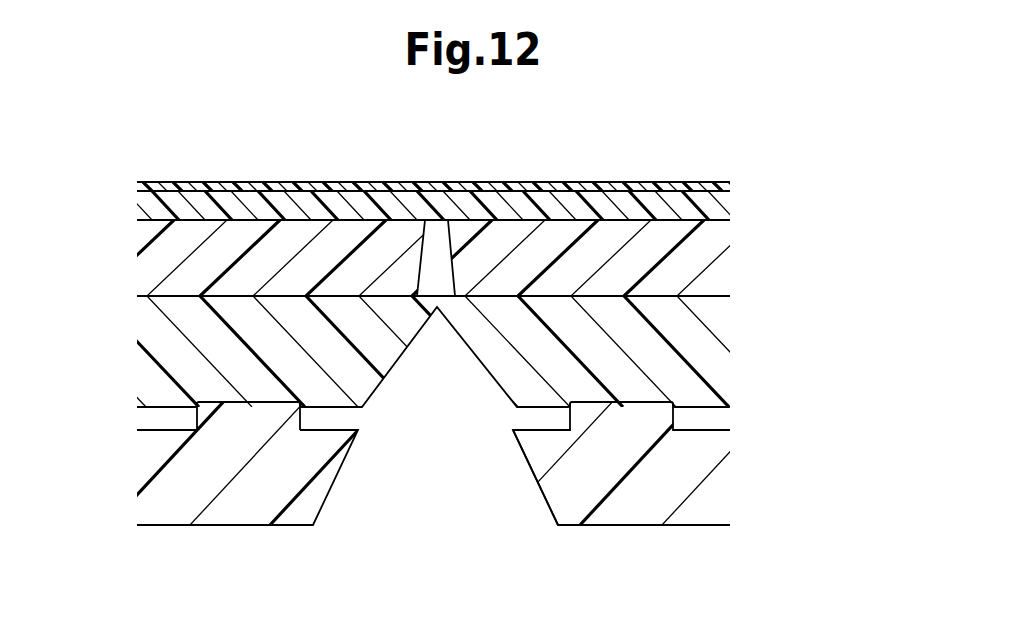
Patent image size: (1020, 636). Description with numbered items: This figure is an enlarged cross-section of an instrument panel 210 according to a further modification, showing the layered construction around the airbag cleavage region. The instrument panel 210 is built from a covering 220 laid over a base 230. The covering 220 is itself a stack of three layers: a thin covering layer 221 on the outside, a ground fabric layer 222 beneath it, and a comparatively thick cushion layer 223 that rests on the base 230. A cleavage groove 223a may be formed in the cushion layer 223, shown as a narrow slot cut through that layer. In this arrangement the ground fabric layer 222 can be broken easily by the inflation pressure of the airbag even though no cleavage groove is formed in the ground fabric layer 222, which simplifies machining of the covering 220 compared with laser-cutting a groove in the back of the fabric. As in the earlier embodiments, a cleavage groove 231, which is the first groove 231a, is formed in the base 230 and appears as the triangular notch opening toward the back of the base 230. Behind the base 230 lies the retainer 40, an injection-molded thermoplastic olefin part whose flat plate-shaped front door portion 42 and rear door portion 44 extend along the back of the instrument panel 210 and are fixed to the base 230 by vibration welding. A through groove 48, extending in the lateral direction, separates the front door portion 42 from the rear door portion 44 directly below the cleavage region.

The instrument panel 210 is at (406, 296).
The covering 220 is at (437, 278).
The covering layer 221 is at (722, 185).
The ground fabric layer 222 is at (722, 209).
The cushion layer 223 is at (453, 300).
The cleavage groove 223a is at (452, 297).
The base 230 is at (391, 395).
The cleavage groove 231 is at (248, 416).
The first groove 231a is at (312, 443).
The retainer 40 is at (450, 483).
The front door portion 42 is at (231, 527).
The rear door portion 44 is at (636, 526).
The through groove 48 is at (547, 500).